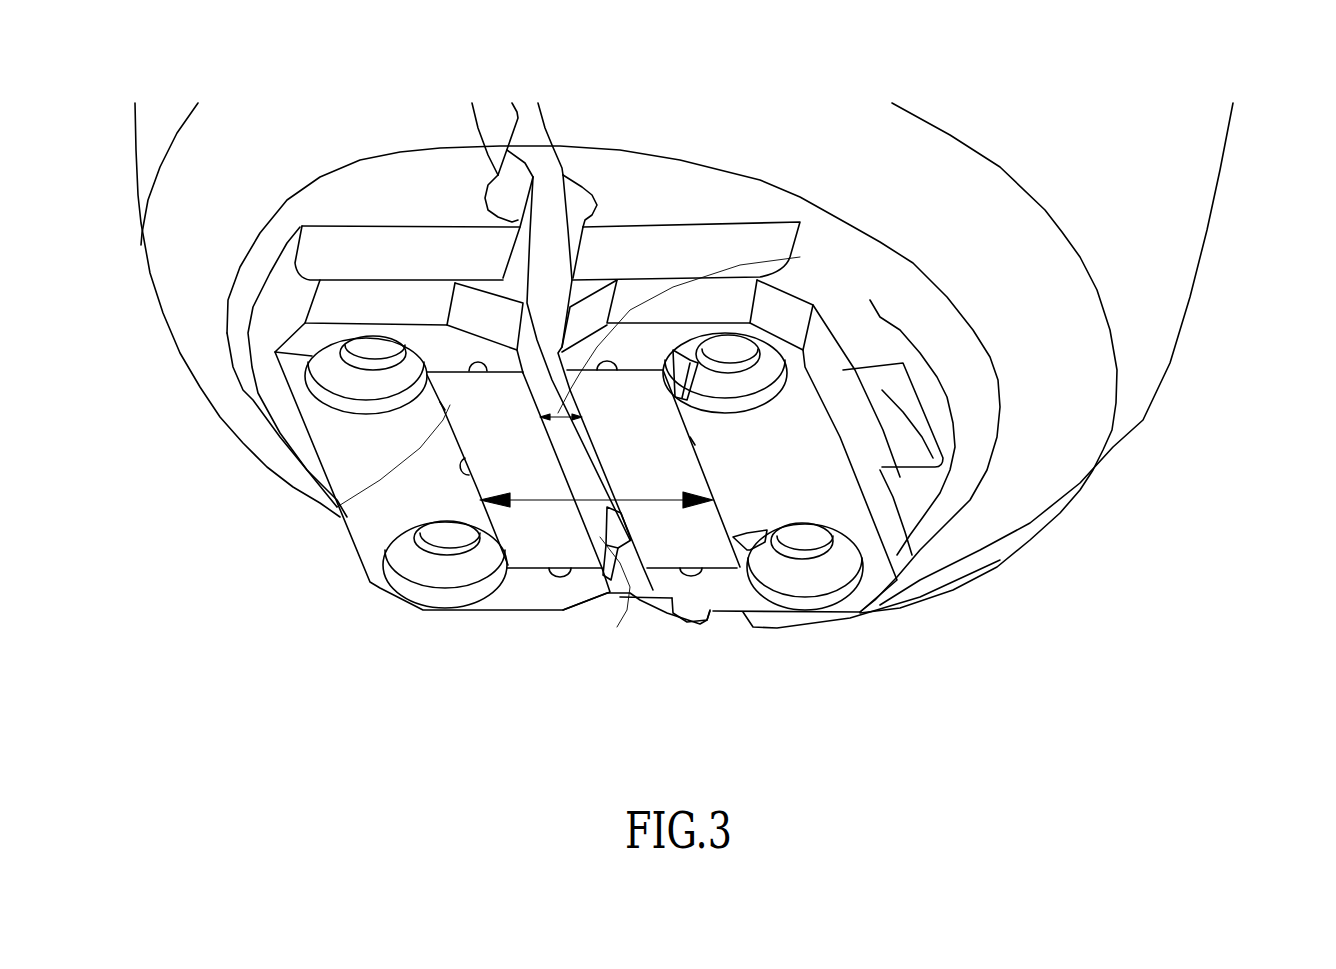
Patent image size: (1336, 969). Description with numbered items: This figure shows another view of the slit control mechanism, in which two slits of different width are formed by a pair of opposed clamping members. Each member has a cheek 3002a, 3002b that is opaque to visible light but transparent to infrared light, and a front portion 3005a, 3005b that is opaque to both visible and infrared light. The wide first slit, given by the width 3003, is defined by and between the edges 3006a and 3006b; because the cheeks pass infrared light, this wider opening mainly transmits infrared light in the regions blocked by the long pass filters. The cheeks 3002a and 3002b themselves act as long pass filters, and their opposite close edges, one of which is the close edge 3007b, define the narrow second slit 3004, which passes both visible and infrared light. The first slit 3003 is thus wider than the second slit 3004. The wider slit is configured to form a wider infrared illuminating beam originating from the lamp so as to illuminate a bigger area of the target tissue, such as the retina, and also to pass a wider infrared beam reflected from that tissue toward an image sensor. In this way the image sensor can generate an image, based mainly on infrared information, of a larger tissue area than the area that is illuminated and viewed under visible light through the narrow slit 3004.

The cheek 3002a is at (520, 552).
The cheek 3002b is at (700, 540).
The width 3003 is at (547, 497).
The narrow slit 3004 is at (800, 257).
The front portion 3005a is at (313, 400).
The front portion 3005b is at (807, 473).
The edge 3006a is at (440, 402).
The edge 3006b is at (690, 437).
The close edge 3007b is at (622, 598).